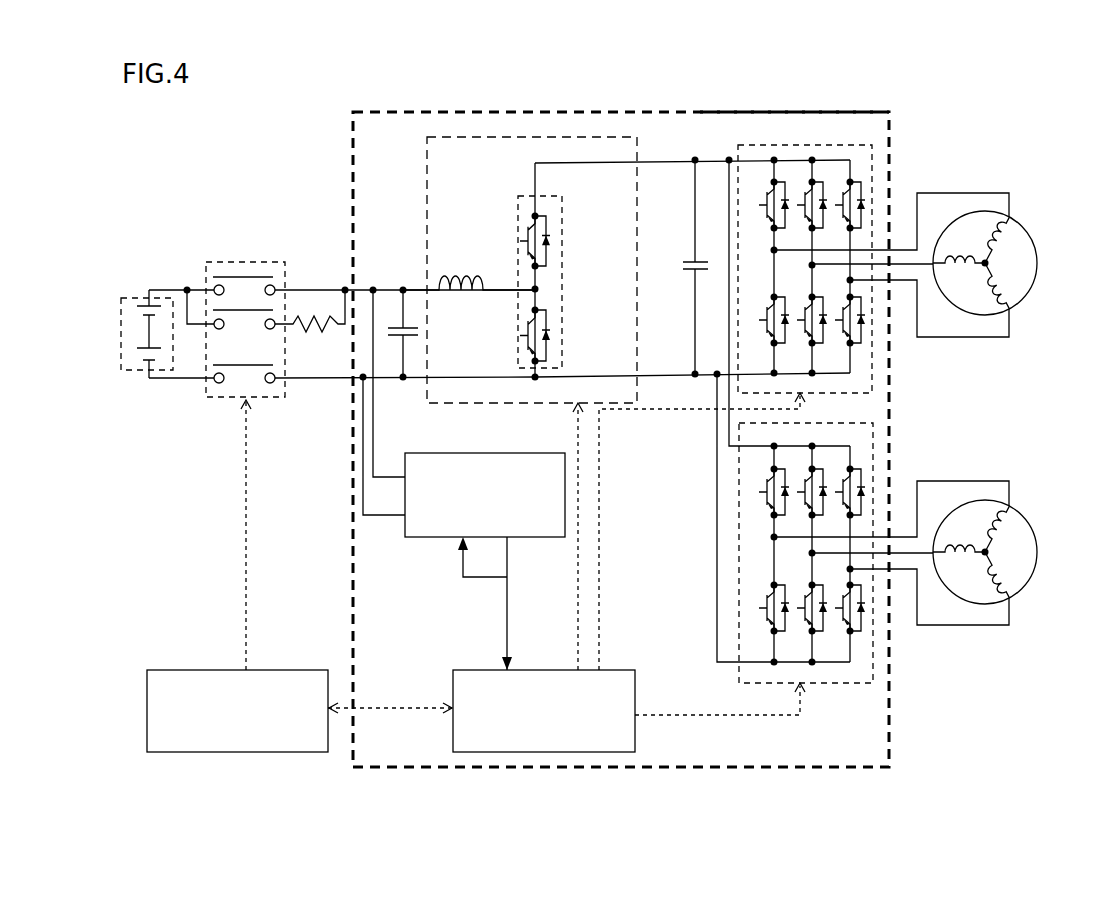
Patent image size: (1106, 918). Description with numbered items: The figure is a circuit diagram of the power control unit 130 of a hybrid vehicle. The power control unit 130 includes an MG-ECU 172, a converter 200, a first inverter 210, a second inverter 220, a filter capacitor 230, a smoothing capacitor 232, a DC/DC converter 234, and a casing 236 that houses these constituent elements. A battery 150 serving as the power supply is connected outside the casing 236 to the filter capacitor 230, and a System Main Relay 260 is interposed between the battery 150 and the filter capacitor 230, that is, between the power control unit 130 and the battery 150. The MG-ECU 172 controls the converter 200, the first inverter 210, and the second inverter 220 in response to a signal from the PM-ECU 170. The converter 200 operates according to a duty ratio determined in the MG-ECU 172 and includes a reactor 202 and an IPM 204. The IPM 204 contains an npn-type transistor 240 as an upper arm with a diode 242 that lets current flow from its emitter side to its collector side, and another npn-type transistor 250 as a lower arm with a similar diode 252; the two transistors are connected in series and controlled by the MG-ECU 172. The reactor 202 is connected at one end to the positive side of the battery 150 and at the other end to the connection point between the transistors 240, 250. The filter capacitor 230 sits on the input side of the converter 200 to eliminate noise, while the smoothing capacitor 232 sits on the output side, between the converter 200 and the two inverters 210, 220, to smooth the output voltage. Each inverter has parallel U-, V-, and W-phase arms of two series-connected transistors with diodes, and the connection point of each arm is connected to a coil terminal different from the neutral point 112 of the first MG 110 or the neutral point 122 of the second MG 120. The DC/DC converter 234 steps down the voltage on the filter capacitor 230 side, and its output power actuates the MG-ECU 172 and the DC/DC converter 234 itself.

The first MG 110 is at (933, 246).
The neutral point 112 is at (985, 263).
The second MG 120 is at (933, 535).
The neutral point 122 is at (985, 552).
The power control unit 130 is at (697, 106).
The battery 150 is at (136, 294).
The PM-ECU 170 is at (185, 668).
The MG-ECU 172 is at (470, 668).
The converter 200 is at (563, 137).
The reactor 202 is at (469, 273).
The IPM 204 is at (562, 290).
The first inverter 210 is at (872, 350).
The second inverter 220 is at (877, 637).
The filter capacitor 230 is at (393, 306).
The smoothing capacitor 232 is at (690, 258).
The DC/DC converter 234 is at (512, 452).
The casing 236 is at (770, 112).
The npn-type transistor 240 is at (525, 240).
The diode 242 is at (552, 240).
The npn-type transistor 250 is at (521, 334).
The diode 252 is at (552, 334).
The System Main Relay 260 is at (242, 261).